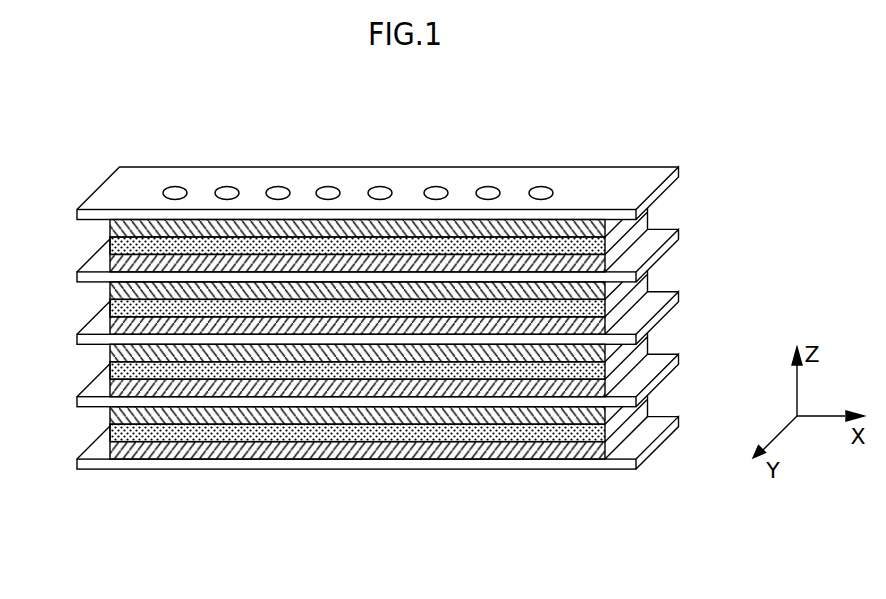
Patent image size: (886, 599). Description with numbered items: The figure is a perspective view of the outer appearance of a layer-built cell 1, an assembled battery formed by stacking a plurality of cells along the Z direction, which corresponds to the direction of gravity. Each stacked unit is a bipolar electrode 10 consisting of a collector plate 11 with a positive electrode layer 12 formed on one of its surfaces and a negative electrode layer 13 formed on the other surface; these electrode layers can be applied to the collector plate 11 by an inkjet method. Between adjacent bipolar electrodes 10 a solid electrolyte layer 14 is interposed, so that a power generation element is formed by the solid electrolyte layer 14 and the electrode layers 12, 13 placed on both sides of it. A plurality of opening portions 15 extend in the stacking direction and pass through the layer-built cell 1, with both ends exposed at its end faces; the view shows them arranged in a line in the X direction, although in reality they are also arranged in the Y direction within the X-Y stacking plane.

The layer-built cell 1 is at (411, 339).
The bipolar electrode 10 is at (757, 228).
The collector plate 11 is at (604, 268).
The positive electrode layer 12 is at (608, 266).
The negative electrode layer 13 is at (622, 285).
The solid electrolyte layer 14 is at (112, 250).
The opening portion 15 is at (278, 192).